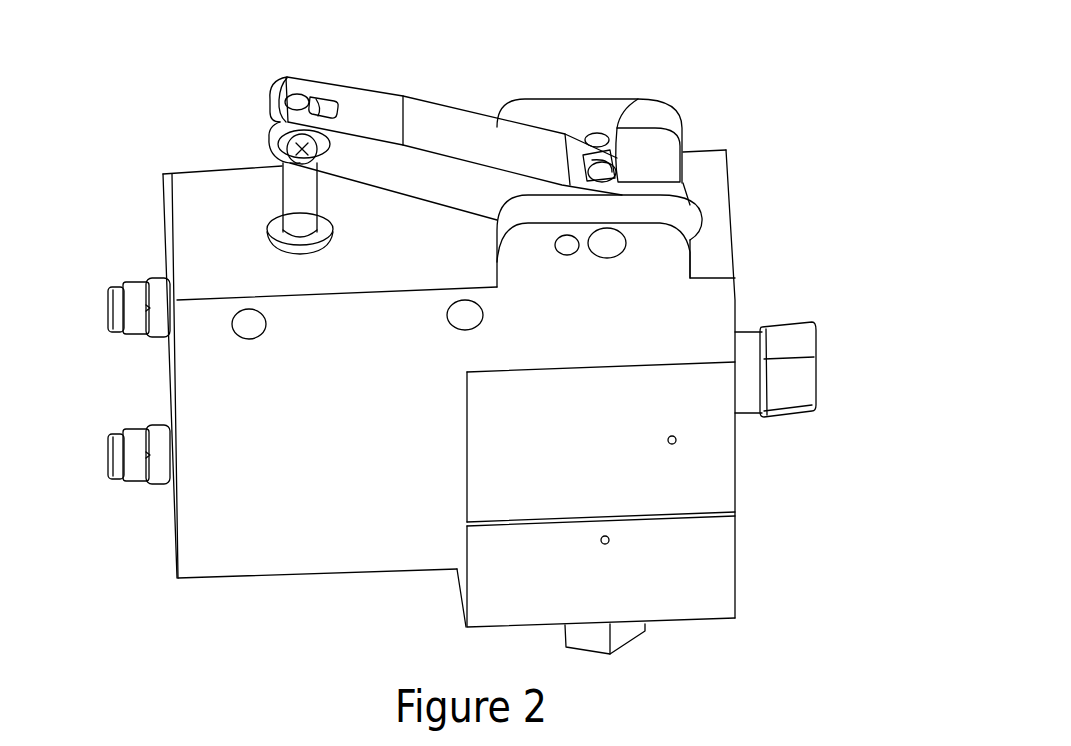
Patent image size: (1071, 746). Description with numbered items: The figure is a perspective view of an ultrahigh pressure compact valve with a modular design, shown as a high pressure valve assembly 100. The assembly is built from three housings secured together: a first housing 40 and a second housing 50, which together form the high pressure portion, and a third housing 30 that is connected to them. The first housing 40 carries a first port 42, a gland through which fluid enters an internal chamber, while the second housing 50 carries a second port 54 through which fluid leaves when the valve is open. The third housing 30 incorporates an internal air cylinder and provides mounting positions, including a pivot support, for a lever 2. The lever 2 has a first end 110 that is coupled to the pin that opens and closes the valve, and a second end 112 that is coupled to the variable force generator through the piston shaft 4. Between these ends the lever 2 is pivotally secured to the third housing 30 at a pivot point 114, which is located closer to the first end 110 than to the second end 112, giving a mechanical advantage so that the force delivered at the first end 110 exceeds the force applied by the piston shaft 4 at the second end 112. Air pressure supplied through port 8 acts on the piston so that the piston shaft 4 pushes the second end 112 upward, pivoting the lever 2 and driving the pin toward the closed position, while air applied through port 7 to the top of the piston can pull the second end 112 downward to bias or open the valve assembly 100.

The high pressure valve assembly 100 is at (722, 74).
The lever 2 is at (437, 112).
The piston shaft 4 is at (287, 190).
The second end of the lever 112 is at (278, 80).
The pivot point 114 is at (562, 248).
The first end of the lever 110 is at (618, 158).
The port 7 is at (132, 288).
The port 8 is at (133, 437).
The third housing 30 is at (700, 290).
The first housing 40 is at (703, 467).
The first port 42 is at (794, 333).
The second housing 50 is at (675, 558).
The second port 54 is at (630, 633).